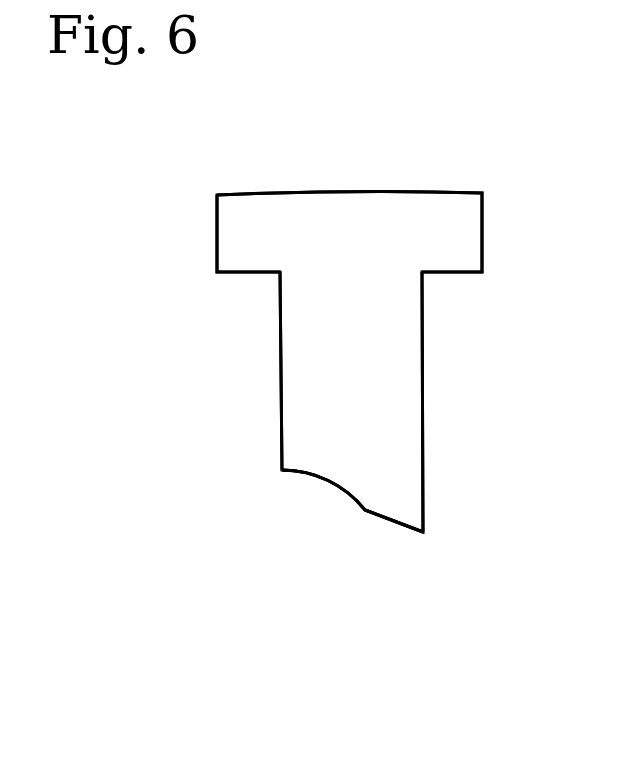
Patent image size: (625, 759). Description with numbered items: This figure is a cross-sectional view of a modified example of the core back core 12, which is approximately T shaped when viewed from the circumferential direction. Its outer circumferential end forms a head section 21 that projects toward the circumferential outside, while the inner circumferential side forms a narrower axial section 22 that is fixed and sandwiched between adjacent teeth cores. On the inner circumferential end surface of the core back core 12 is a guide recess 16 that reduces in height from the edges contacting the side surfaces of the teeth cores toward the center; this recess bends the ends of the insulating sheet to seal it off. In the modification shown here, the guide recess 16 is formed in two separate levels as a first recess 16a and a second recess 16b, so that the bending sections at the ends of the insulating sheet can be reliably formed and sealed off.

The core back core 12 is at (417, 146).
The head section 21 is at (475, 236).
The axial section 22 is at (410, 372).
The guide recess 16 is at (376, 530).
The first recess 16a is at (323, 480).
The second recess 16b is at (412, 533).